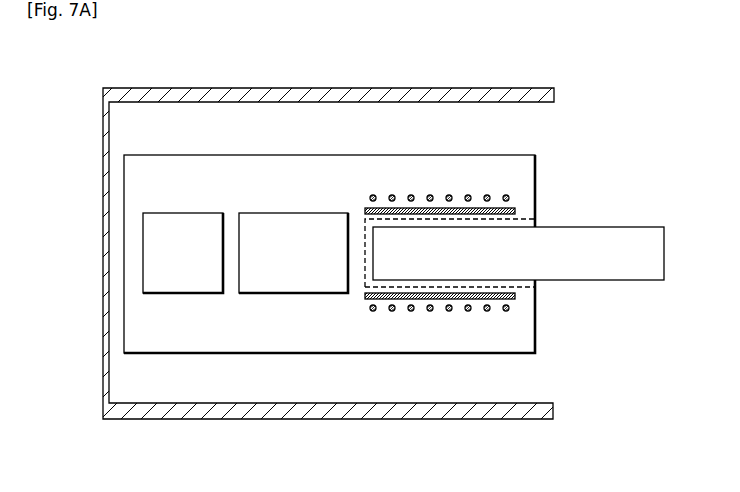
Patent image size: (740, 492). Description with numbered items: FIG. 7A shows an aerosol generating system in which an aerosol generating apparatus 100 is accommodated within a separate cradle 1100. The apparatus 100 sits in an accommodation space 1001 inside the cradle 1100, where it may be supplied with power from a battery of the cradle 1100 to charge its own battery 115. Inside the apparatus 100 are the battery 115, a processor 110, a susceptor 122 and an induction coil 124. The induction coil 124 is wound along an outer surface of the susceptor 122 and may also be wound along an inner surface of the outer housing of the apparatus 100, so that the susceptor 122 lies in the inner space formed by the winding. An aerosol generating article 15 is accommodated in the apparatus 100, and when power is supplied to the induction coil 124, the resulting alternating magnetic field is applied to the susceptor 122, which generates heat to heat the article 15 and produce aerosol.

The cradle 1100 is at (418, 88).
The accommodation space 1001 is at (542, 129).
The aerosol generating apparatus 100 is at (183, 154).
The battery 115 is at (184, 213).
The processor 110 is at (294, 213).
The induction coil 124 is at (468, 193).
The susceptor 122 is at (497, 206).
The aerosol generating article 15 is at (610, 227).